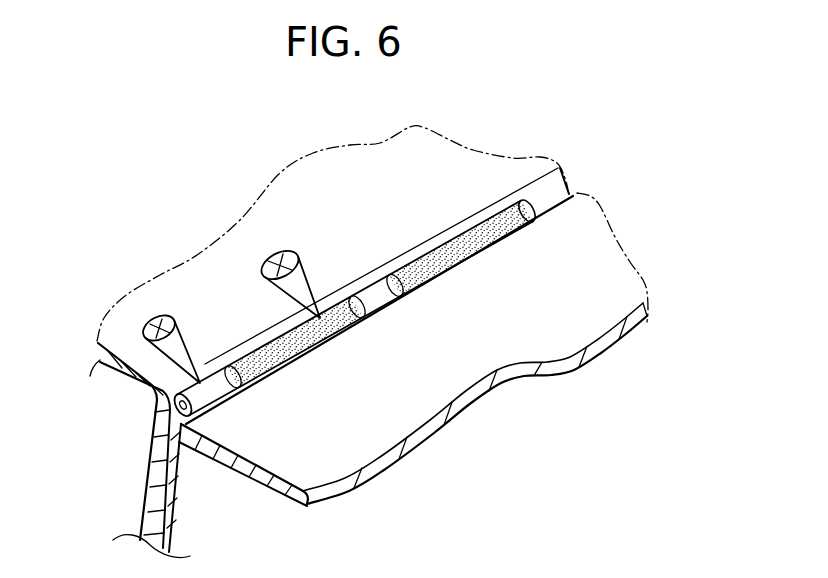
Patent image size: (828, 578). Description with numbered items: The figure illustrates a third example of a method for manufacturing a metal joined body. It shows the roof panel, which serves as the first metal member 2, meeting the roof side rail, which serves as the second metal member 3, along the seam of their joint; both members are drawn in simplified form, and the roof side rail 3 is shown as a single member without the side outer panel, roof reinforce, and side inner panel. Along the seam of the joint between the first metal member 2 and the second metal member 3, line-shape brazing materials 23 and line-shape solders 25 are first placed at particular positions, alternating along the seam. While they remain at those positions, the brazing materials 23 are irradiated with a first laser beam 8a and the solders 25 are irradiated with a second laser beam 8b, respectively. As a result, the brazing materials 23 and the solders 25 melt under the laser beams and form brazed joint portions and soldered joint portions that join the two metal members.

The roof panel 2 is at (192, 254).
The roof side rail 3 is at (434, 434).
The first laser beam 8a is at (150, 316).
The second laser beam 8b is at (272, 251).
The line-shape brazing material 23 is at (213, 401).
The line-shape solder 25 is at (290, 357).